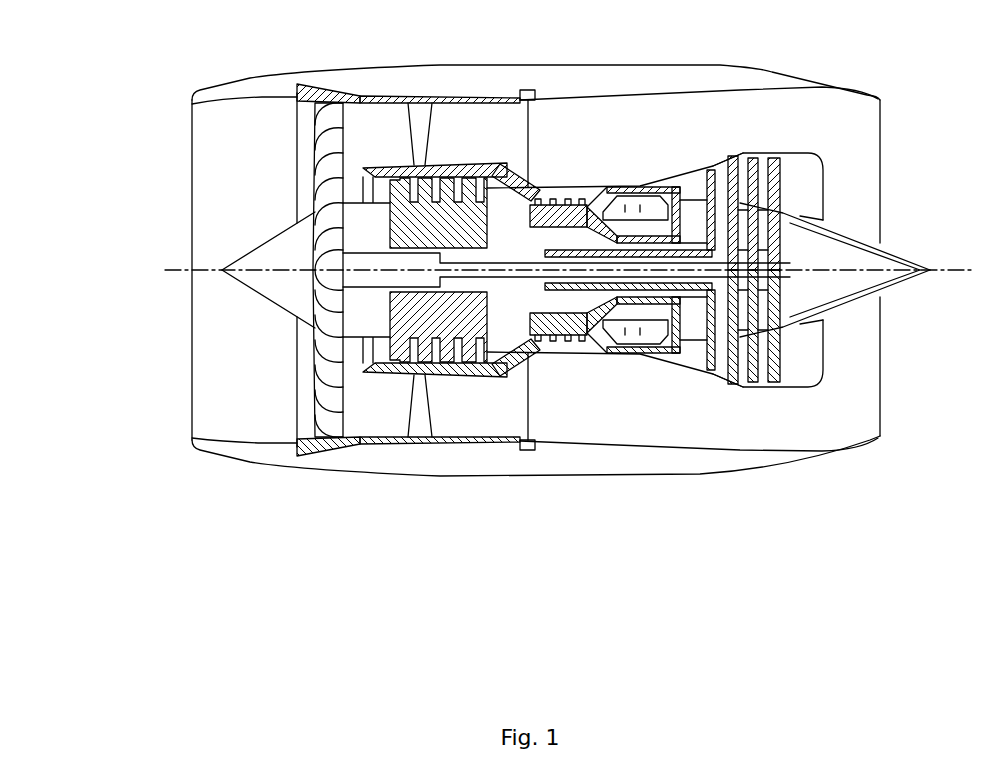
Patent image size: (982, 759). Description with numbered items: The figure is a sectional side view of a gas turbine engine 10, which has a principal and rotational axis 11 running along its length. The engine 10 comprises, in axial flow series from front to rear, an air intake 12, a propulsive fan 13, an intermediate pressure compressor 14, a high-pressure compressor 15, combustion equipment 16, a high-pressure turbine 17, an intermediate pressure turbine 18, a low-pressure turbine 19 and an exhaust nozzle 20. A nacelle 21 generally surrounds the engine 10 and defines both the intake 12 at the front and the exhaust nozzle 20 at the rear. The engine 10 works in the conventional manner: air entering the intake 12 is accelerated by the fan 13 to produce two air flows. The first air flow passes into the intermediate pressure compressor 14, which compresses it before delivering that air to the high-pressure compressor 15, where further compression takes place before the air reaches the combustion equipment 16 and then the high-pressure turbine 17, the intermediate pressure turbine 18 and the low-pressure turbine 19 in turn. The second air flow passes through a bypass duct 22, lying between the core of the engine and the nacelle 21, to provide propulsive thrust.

The gas turbine engine 10 is at (175, 143).
The principal and rotational axis 11 is at (176, 270).
The air intake 12 is at (256, 98).
The propulsive fan 13 is at (318, 407).
The intermediate pressure compressor 14 is at (448, 357).
The high-pressure compressor 15 is at (550, 207).
The combustion equipment 16 is at (633, 337).
The high-pressure turbine 17 is at (672, 337).
The intermediate pressure turbine 18 is at (710, 207).
The low-pressure turbine 19 is at (730, 188).
The exhaust nozzle 20 is at (881, 434).
The nacelle 21 is at (771, 70).
The bypass duct 22 is at (482, 152).